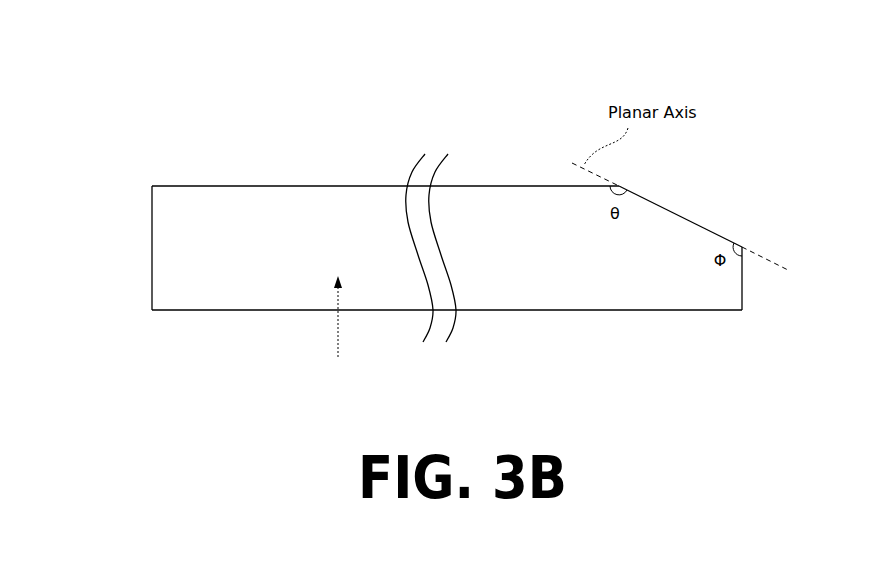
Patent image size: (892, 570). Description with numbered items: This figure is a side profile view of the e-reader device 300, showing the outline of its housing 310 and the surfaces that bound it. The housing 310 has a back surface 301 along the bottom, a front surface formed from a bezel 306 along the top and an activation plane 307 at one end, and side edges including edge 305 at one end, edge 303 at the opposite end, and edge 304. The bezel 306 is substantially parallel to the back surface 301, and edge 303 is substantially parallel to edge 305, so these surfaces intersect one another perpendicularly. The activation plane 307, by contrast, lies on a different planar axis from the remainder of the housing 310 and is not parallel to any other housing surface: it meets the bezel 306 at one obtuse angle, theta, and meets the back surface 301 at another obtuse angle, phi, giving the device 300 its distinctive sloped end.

The e-reader device 300 is at (447, 248).
The back surface 301 is at (564, 323).
The side edge 303 is at (762, 280).
The side edge 304 is at (341, 332).
The side edge 305 is at (128, 220).
The bezel 306 is at (340, 168).
The activation plane 307 is at (692, 201).
The housing 310 is at (532, 138).